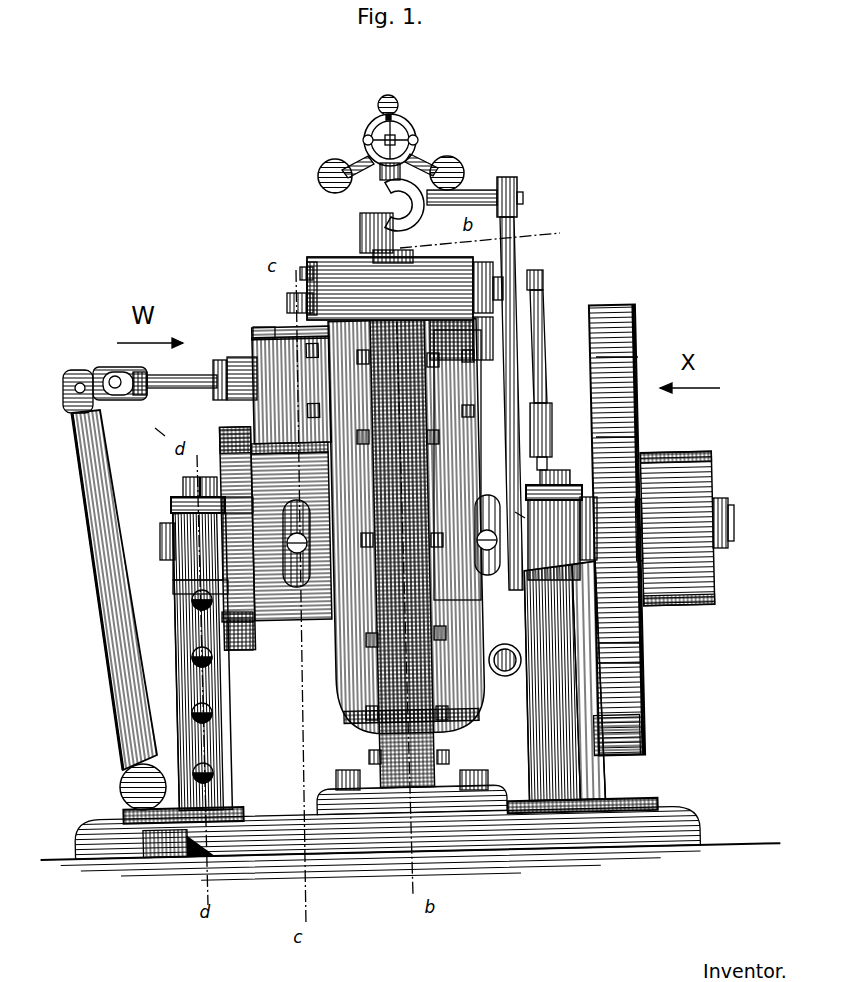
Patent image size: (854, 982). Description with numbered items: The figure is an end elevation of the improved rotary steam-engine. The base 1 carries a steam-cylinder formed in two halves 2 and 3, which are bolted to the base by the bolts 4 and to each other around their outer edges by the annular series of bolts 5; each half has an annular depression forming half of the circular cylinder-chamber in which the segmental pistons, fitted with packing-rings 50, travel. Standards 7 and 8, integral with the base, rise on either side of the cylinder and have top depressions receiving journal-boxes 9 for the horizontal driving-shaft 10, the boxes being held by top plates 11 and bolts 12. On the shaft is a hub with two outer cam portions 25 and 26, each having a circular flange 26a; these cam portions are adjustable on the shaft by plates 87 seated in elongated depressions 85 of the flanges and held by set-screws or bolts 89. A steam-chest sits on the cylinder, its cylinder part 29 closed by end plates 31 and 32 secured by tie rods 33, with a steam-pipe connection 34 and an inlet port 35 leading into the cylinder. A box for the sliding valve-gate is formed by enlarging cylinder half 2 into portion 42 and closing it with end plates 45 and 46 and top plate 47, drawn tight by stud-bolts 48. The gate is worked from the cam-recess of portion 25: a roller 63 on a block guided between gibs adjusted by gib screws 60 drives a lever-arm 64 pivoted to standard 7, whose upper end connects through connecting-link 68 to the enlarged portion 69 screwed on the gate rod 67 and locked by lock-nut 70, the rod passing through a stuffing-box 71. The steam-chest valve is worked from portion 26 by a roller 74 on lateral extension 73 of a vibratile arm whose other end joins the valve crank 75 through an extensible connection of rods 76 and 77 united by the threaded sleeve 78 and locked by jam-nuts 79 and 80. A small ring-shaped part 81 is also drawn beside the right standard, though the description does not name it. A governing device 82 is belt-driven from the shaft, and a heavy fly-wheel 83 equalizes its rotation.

The base 1 is at (507, 827).
The cylinder half 2 is at (474, 689).
The cylinder half 3 is at (360, 670).
The bolts 4 is at (345, 780).
The annular series of bolts 5 is at (362, 320).
The standard 7 is at (210, 700).
The standard 8 is at (582, 780).
The journal-boxes 9 is at (178, 520).
The driving-shaft 10 is at (162, 541).
The top plates 11 is at (178, 497).
The bolts 12 is at (203, 478).
The cam portion 25 is at (220, 372).
The cam portion 26 is at (482, 450).
The circular flange 26a is at (268, 633).
The steam-chest cylinder part 29 is at (330, 300).
The end plate 31 is at (262, 345).
The end plate 32 is at (535, 290).
The tie rods or bolts 33 is at (498, 288).
The steam-pipe connection 34 is at (385, 225).
The inlet port 35 is at (300, 330).
The enlarged cylinder portion 42 is at (483, 333).
The end plate 45 is at (215, 380).
The end plate 46 is at (445, 365).
The top plate 47 is at (308, 300).
The stud-bolts 48 is at (443, 318).
The packing-rings 50 is at (483, 272).
The gib screws or bolts 60 is at (193, 712).
The roller 63 is at (232, 648).
The lever-arm 64 is at (135, 707).
The rod 67 is at (150, 378).
The connecting-link 68 is at (80, 375).
The enlarged portion 69 is at (117, 392).
The lock-nut 70 is at (143, 390).
The stuffing-box 71 is at (160, 432).
The lateral extension 73 is at (603, 643).
The roller 74 is at (586, 515).
The crank 75 is at (513, 287).
The rod 76 is at (630, 327).
The rod 77 is at (610, 437).
The tubular coupling or sleeve 78 is at (540, 423).
The jam-nut 79 is at (555, 370).
The jam-nut 80 is at (520, 515).
The ring 81 is at (505, 670).
The governing device 82 is at (393, 160).
The fly-wheel 83 is at (623, 663).
The elongated depressions 85 is at (230, 503).
The plates 87 is at (297, 530).
The set-screws or bolts 89 is at (180, 595).